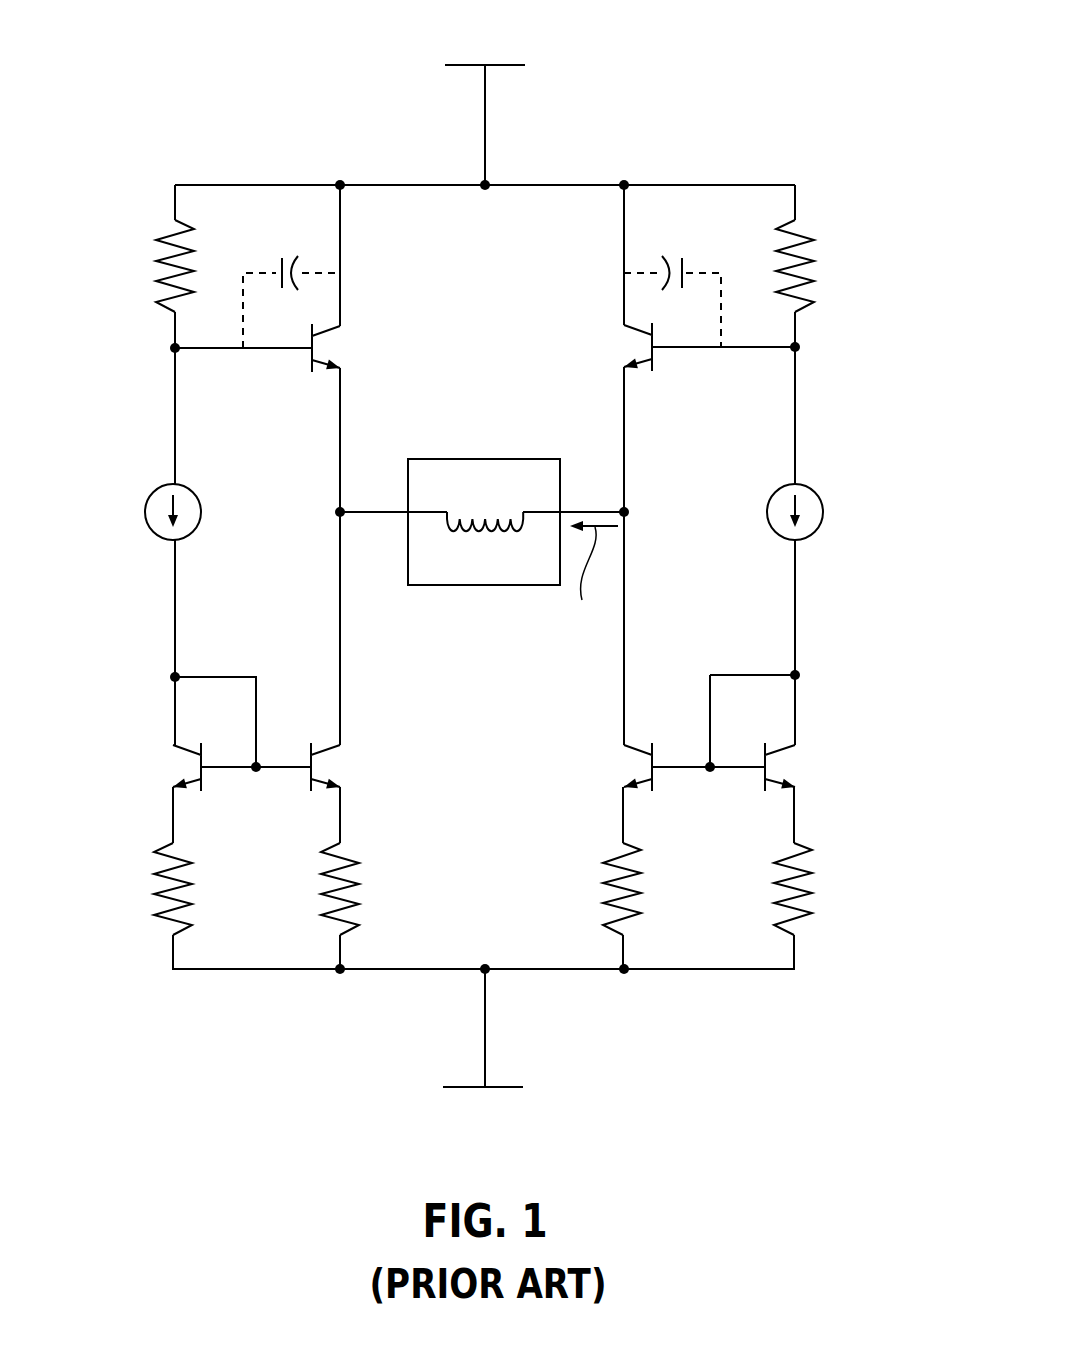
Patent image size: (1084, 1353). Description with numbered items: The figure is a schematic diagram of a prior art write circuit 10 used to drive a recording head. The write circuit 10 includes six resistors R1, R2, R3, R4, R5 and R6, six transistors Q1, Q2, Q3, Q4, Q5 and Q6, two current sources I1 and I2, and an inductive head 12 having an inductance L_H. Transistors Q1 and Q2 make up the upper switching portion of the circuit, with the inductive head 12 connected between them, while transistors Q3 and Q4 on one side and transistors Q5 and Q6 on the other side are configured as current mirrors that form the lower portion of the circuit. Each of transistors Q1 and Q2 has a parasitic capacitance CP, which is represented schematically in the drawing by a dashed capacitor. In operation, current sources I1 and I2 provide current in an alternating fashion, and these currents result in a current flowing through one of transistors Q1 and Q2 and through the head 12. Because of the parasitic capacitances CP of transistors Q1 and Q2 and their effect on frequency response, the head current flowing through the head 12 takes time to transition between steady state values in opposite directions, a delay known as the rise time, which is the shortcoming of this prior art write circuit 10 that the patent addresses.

The write circuit 10 is at (487, 579).
The inductive head 12 is at (485, 459).
The resistor R1 is at (152, 266).
The resistor R2 is at (819, 266).
The resistor R3 is at (151, 889).
The resistor R4 is at (315, 889).
The resistor R5 is at (598, 889).
The resistor R6 is at (818, 889).
The transistor Q1 is at (344, 348).
The transistor Q2 is at (615, 347).
The transistor Q3 is at (166, 767).
The transistor Q4 is at (345, 767).
The transistor Q5 is at (615, 767).
The transistor Q6 is at (800, 767).
The current source I1 is at (156, 512).
The current source I2 is at (816, 512).
The parasitic capacitance CP is at (482, 254).